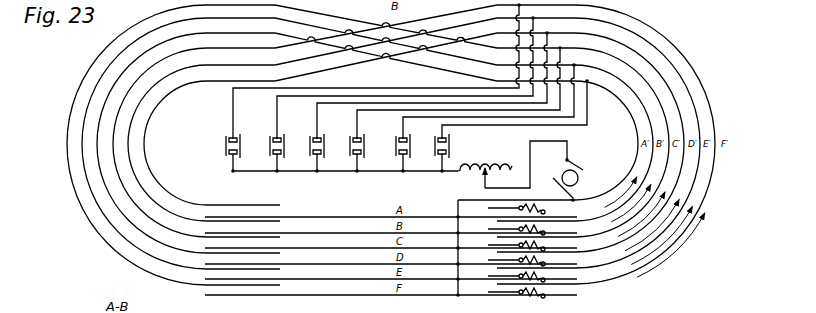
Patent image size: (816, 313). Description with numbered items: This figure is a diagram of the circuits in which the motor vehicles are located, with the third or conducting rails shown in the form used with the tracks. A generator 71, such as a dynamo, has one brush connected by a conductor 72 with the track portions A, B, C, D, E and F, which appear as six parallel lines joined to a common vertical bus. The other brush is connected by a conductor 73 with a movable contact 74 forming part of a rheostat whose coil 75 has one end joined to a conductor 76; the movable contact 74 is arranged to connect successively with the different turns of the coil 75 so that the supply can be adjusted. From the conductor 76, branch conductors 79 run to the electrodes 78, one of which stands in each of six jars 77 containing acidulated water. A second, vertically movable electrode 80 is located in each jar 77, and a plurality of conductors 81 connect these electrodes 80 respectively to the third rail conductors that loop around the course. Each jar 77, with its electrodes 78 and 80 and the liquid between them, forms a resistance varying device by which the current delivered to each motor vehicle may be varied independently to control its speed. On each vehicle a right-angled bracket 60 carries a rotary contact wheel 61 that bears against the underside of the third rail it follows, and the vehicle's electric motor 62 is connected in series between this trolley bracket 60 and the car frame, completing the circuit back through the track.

The right-angled bracket 60 is at (500, 272).
The rotary contact wheel 61 is at (490, 291).
The electric motor 62 is at (546, 284).
The generator 71 is at (578, 178).
The conductor 72 is at (457, 200).
The conductor 73 is at (530, 141).
The movable contact 74 is at (482, 186).
The coil 75 is at (488, 158).
The conductor 76 is at (350, 152).
The jar 77 is at (270, 148).
The electrode 78 is at (229, 154).
The cell connection 79 is at (435, 164).
The vertically movable electrode 80 is at (440, 138).
The conductor 81 is at (445, 117).